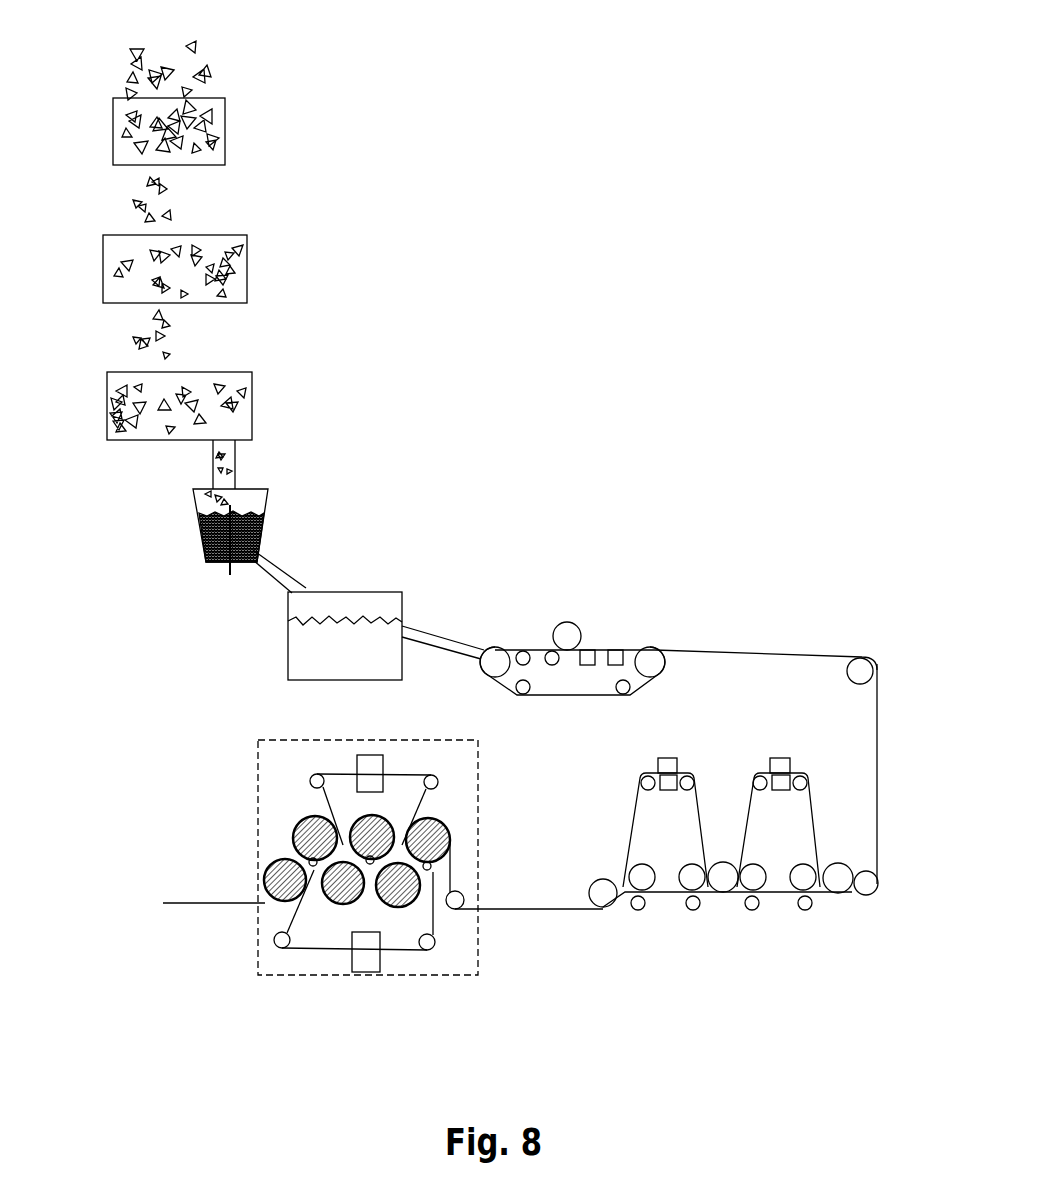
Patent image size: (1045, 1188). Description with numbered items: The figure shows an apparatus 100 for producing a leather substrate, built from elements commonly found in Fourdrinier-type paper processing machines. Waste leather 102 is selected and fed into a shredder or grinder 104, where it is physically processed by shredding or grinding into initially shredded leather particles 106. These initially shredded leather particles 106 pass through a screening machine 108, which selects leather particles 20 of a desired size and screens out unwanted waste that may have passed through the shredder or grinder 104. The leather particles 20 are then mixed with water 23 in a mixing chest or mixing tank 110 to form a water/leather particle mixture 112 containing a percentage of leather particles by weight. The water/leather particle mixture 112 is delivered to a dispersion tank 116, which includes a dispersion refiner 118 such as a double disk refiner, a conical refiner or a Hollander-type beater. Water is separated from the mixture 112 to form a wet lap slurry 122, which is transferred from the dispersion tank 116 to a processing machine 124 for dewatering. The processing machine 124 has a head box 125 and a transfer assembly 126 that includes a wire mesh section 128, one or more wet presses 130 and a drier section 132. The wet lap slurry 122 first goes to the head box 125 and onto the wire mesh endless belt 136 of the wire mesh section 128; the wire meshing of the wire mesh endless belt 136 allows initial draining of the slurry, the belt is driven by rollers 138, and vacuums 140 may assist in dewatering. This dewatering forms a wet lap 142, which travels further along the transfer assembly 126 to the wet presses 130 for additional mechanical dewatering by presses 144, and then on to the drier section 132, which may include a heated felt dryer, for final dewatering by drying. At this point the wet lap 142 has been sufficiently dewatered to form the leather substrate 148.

The apparatus 100 is at (646, 74).
The waste leather 102 is at (192, 47).
The shredder or grinder 104 is at (242, 137).
The initially shredded leather particles 106 is at (158, 191).
The screening machine 108 is at (264, 267).
The leather particles 20 is at (168, 333).
The water 23 is at (240, 384).
The mixing chest or mixing tank 110 is at (254, 403).
The water/leather particle mixture 112 is at (115, 435).
The dispersion tank 116 is at (195, 505).
The dispersion refiner 118 is at (210, 554).
The wet lap slurry 122 is at (287, 595).
The processing machine 124 is at (124, 697).
The head box 125 is at (326, 682).
The transfer assembly 126 is at (488, 630).
The wire mesh section 128 is at (577, 675).
The wire mesh endless belt 136 is at (525, 688).
The rollers 138 is at (495, 662).
The vacuums 140 is at (590, 650).
The wet lap 142 is at (736, 655).
The wet presses 130 is at (731, 875).
The presses 144 is at (605, 895).
The drier section 132 is at (350, 994).
The leather substrate 148 is at (184, 900).